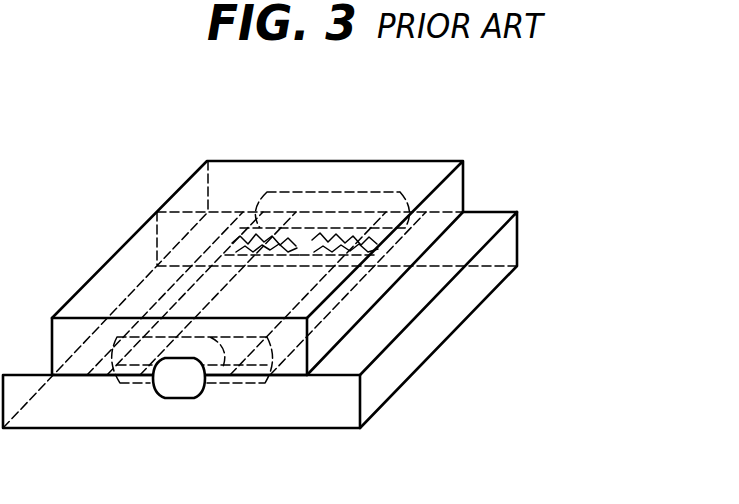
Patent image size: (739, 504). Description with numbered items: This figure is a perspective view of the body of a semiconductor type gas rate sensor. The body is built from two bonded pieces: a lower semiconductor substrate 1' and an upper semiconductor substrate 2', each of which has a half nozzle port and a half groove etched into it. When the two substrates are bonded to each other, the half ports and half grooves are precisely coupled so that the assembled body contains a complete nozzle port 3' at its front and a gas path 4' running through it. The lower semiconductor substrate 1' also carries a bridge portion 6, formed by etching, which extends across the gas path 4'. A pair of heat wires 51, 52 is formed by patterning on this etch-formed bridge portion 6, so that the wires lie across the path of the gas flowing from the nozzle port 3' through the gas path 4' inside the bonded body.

The lower semiconductor substrate 1' is at (260, 320).
The upper semiconductor substrate 2' is at (300, 268).
The nozzle port 3' is at (192, 413).
The gas path 4' is at (249, 293).
The bridge portion 6 is at (308, 238).
The heat wire 51 is at (270, 225).
The heat wire 52 is at (370, 196).